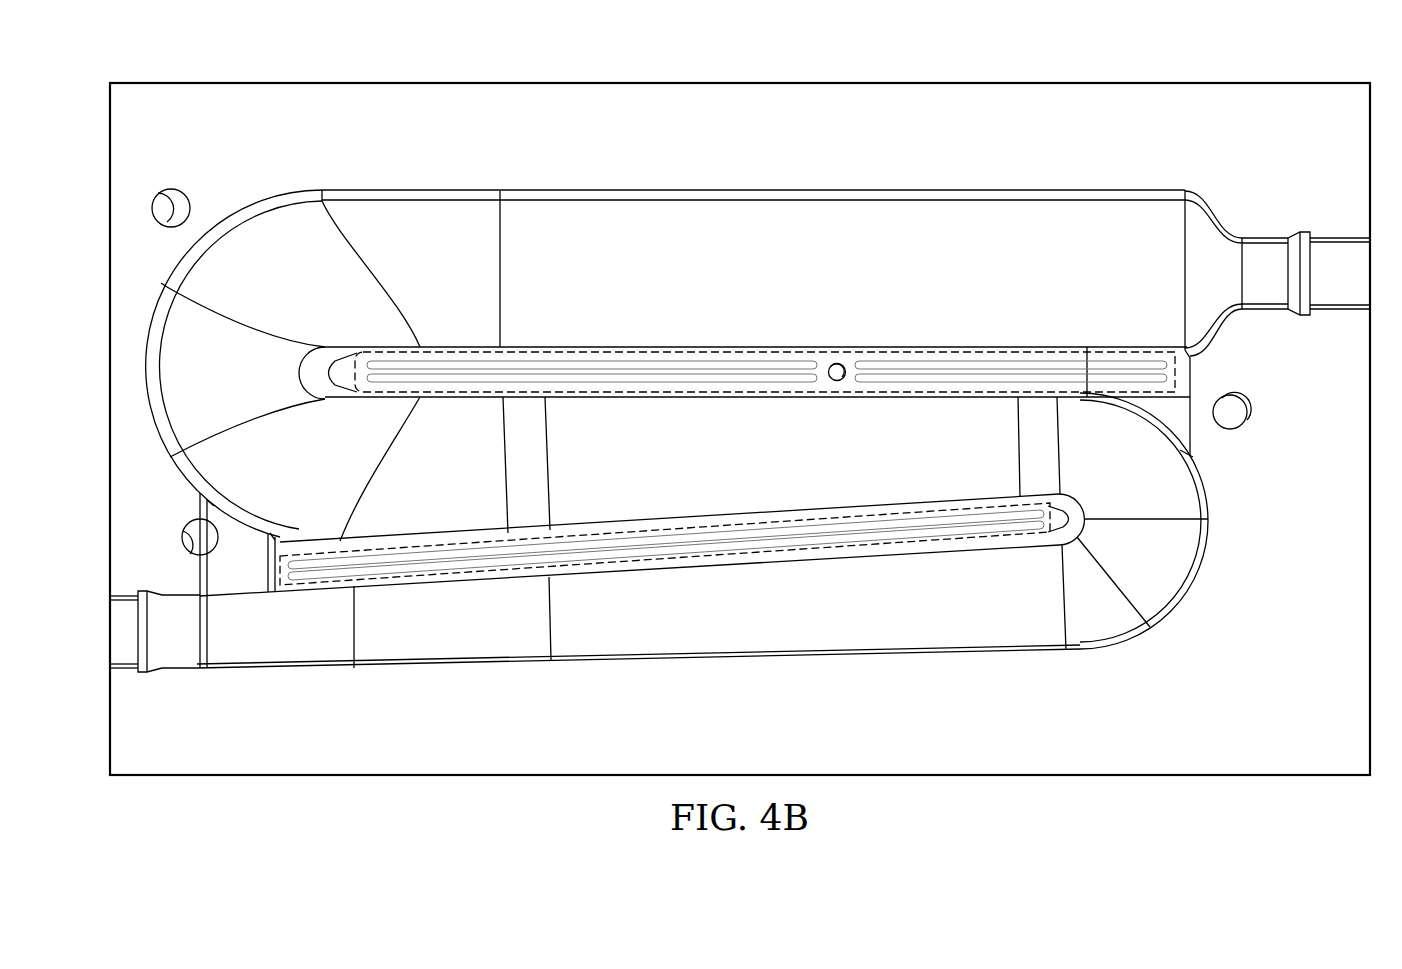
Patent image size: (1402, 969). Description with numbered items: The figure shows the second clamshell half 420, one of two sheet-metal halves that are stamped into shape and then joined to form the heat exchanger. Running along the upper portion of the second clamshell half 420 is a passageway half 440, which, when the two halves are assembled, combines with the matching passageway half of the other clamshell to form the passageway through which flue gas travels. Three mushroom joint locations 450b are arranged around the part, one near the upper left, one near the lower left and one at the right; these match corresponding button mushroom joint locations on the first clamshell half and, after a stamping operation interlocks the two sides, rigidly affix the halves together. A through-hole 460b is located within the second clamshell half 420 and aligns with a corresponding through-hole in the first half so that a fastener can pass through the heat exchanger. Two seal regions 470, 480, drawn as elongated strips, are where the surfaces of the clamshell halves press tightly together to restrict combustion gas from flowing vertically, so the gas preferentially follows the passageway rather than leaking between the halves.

The second clamshell half 420 is at (1076, 84).
The passageway half 440 is at (858, 190).
The mushroom joint locations 450b is at (172, 190).
The through-hole 460b is at (839, 363).
The seal region 470 is at (768, 351).
The seal region 480 is at (943, 541).